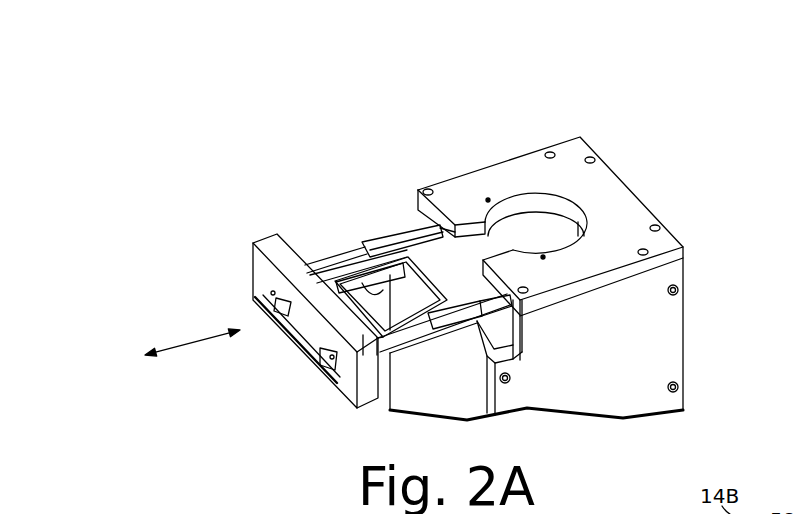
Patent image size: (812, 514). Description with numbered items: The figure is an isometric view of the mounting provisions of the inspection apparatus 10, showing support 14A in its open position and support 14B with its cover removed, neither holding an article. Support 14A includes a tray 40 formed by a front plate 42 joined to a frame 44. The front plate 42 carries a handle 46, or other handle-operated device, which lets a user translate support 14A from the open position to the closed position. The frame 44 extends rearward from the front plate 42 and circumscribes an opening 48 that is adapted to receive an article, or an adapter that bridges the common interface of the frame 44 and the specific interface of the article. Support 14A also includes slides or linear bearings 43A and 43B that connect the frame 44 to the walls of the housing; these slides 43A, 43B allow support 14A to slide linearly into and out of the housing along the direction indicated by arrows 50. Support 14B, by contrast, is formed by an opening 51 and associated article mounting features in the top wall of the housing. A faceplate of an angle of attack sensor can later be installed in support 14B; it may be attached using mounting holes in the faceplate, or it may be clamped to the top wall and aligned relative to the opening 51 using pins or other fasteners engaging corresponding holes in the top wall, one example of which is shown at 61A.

The inspection system 10 is at (632, 100).
The support 14A is at (327, 218).
The support 14B is at (490, 152).
The tray 40 is at (313, 377).
The front plate 42 is at (258, 240).
The slide 43A is at (400, 227).
The slide 43B is at (455, 312).
The frame 44 is at (383, 290).
The handle 46 is at (297, 337).
The opening 48 is at (425, 316).
The arrows 50 is at (187, 340).
The opening 51 is at (544, 240).
The holes 61A is at (495, 190).